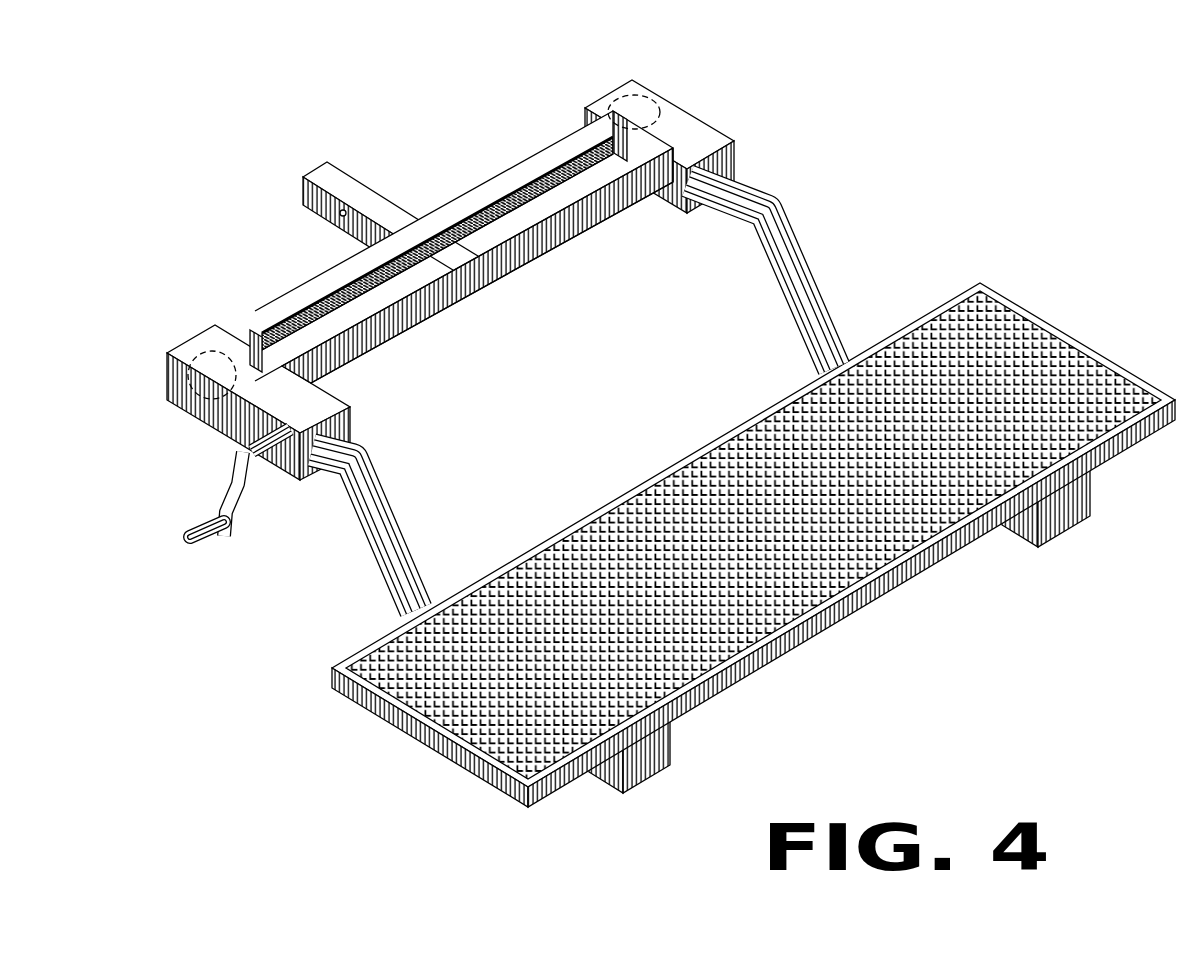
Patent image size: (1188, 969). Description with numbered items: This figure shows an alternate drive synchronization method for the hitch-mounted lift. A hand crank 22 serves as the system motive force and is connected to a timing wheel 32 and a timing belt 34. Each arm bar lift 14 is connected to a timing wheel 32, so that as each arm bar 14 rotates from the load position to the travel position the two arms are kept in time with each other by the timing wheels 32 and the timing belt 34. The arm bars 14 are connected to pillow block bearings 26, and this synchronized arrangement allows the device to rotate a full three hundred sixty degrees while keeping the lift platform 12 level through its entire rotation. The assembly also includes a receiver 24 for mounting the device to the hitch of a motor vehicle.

The lift platform 12 is at (957, 552).
The arm bar lift 14 is at (744, 228).
The hand crank 22 is at (236, 522).
The receiver 24 is at (334, 178).
The pillow block bearings 26 is at (669, 210).
The timing wheel 32 is at (600, 92).
The timing belt 34 is at (465, 203).